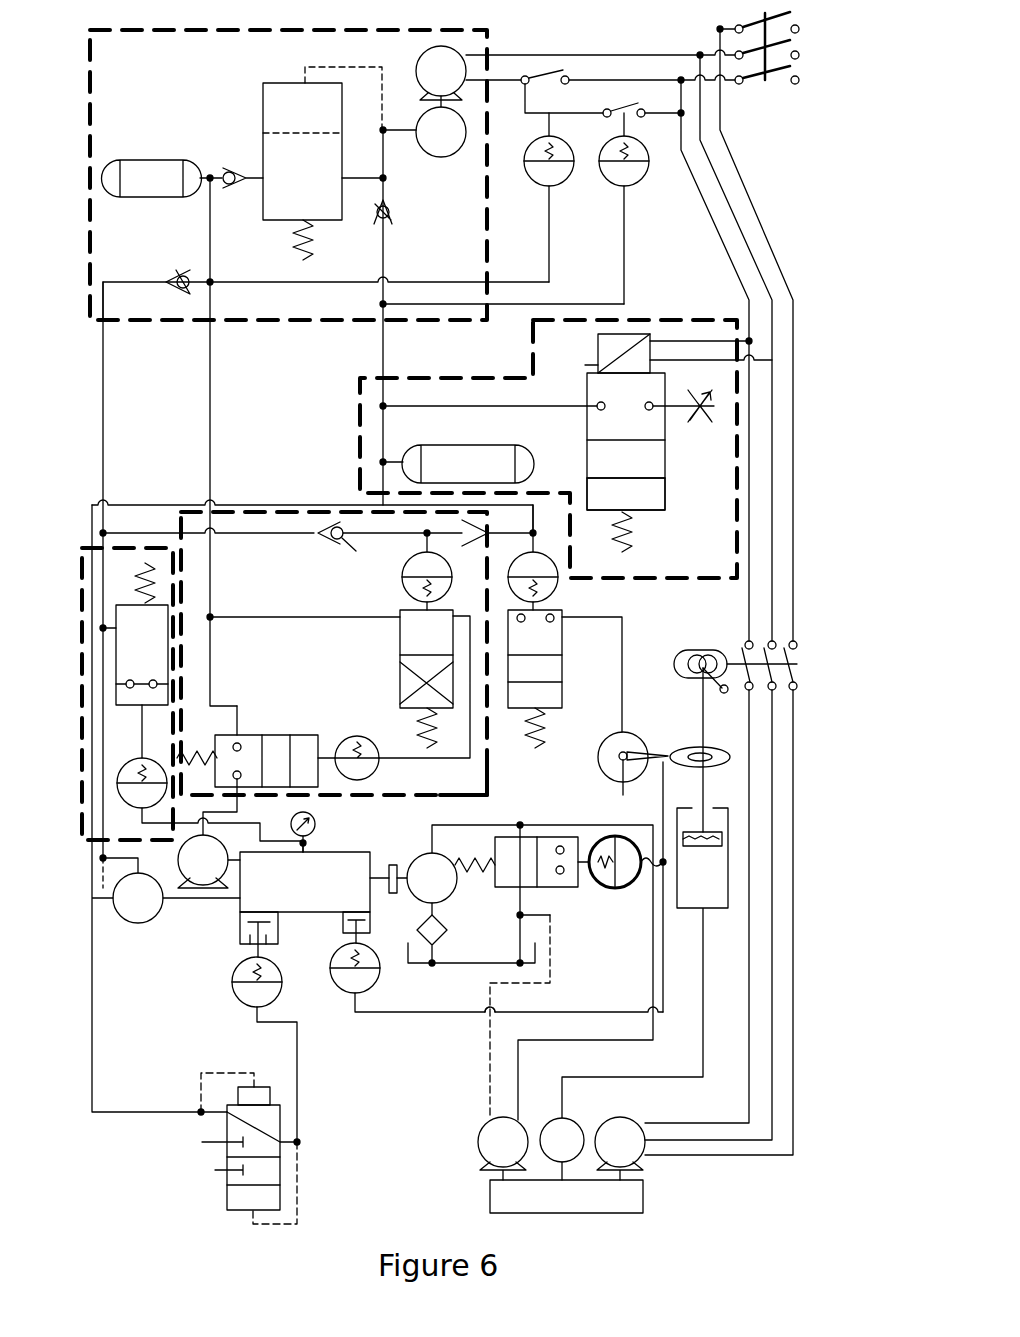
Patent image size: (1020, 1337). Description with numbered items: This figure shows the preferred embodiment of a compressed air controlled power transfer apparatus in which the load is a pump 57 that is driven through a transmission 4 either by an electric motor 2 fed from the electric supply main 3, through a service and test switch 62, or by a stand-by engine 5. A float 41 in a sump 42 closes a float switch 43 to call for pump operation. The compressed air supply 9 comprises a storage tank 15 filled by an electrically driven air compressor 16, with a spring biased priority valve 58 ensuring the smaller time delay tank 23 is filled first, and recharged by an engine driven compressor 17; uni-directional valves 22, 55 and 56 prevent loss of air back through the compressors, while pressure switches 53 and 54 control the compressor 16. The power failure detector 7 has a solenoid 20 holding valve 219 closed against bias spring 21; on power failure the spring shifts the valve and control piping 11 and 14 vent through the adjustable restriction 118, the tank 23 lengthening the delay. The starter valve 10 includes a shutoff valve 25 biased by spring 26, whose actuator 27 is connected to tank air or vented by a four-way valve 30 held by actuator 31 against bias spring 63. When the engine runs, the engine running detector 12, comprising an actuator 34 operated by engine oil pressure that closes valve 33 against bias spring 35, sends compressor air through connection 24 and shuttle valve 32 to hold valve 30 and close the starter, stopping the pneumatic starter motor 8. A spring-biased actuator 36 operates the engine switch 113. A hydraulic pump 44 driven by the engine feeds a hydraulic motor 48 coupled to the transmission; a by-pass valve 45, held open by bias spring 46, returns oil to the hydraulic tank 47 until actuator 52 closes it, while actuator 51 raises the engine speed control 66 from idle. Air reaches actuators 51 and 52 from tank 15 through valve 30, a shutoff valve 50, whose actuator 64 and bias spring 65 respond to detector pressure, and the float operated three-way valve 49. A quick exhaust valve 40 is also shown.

The motor 2 is at (629, 1119).
The electric supply main 3 is at (730, 591).
The transmission 4 is at (548, 1215).
The stand-by engine 5 is at (332, 854).
The power failure detector 7 is at (657, 320).
The pneumatic starter motor 8 is at (215, 854).
The compressed air supply 9 is at (310, 29).
The starter valve 10 is at (487, 776).
The operative connection 11 is at (535, 530).
The engine running detector 12 is at (132, 843).
The operative connection 14 is at (93, 998).
The storage tank 15 is at (162, 158).
The electrically driven air compressor 16 is at (418, 122).
The engine driven compressor 17 is at (127, 921).
The solenoid 20 is at (596, 350).
The bias spring 21 is at (640, 532).
The uni-directional valve 22 is at (226, 168).
The second storage tank 23 is at (470, 448).
The connection 24 is at (283, 537).
The shutoff valve 25 is at (246, 735).
The spring 26 is at (192, 746).
The actuator 27 is at (348, 740).
The four-way valve 30 is at (398, 613).
The actuator 31 is at (402, 579).
The shuttle valve 32 is at (342, 544).
The engine running detector valve 33 is at (128, 707).
The actuator 34 is at (130, 806).
The bias spring 35 is at (140, 590).
The spring-biased actuator 36 is at (232, 989).
The quick exhaust valve 40 is at (225, 1158).
The float 41 is at (700, 848).
The sump 42 is at (690, 910).
The switch 43 is at (740, 648).
The hydraulic pump 44 is at (418, 862).
The by-pass valve 45 is at (506, 889).
The bias spring 46 is at (470, 857).
The hydraulic tank 47 is at (478, 968).
The hydraulic motor 48 is at (480, 1125).
The three-way valve 49 is at (600, 772).
The shutoff valve 50 is at (564, 617).
The actuator 51 is at (331, 983).
The actuator 52 is at (612, 889).
The pressure switch 53 is at (537, 188).
The pressure switch 54 is at (612, 188).
The uni-directional valve 55 is at (178, 272).
The uni-directional valve 56 is at (392, 207).
The pump 57 is at (570, 1119).
The priority valve 58 is at (300, 83).
The service and test switch 62 is at (758, 20).
The bias spring 63 is at (415, 725).
The actuator 64 is at (556, 566).
The bias spring 65 is at (548, 730).
The engine speed control 66 is at (342, 936).
The engine switch 113 is at (238, 938).
The adjustable restriction 118 is at (703, 398).
The power failure detector valve 219 is at (666, 503).